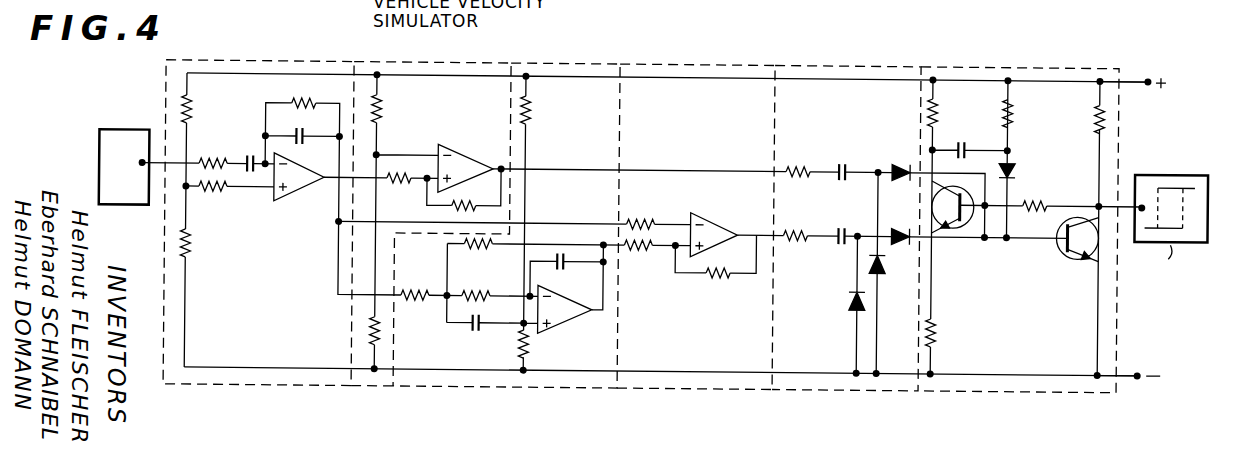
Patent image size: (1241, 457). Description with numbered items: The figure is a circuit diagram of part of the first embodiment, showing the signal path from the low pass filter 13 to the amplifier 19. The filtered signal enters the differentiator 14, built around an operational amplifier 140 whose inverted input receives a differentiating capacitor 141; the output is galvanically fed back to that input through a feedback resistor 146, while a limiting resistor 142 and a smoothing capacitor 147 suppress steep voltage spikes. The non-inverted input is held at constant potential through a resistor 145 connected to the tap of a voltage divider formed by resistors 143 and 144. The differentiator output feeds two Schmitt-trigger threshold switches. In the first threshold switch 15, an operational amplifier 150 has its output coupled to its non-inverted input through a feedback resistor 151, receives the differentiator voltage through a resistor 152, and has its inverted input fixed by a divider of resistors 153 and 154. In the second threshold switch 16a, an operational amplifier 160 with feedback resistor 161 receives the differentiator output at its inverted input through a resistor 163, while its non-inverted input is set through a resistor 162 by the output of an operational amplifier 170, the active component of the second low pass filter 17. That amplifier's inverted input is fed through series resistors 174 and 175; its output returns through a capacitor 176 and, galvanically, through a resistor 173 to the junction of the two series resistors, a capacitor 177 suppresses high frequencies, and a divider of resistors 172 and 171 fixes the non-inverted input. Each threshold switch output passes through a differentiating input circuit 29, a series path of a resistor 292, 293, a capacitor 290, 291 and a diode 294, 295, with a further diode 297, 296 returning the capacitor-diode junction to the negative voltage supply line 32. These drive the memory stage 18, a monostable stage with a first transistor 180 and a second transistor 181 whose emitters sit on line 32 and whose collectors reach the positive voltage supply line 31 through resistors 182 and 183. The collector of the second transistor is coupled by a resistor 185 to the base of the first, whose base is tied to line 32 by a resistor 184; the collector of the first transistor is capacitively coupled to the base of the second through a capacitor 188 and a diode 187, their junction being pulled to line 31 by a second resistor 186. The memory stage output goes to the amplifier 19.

The low pass filter 13 is at (108, 130).
The differentiator 14 is at (236, 60).
The first threshold switch 15 is at (428, 62).
The second threshold switch 16a is at (698, 52).
The second low pass filter 17 is at (570, 59).
The memory stage 18 is at (1043, 50).
The amplifier 19 is at (1180, 166).
The differentiating input circuit 29 is at (864, 49).
The positive voltage supply line 31 is at (1140, 68).
The negative voltage supply line 32 is at (1140, 379).
The operational amplifier 140 is at (305, 195).
The differentiating capacitor 141 is at (253, 168).
The limiting resistor 142 is at (218, 156).
The resistor 143 is at (182, 96).
The resistor 144 is at (194, 254).
The resistor 145 is at (216, 190).
The feedback resistor 146 is at (302, 100).
The smoothing capacitor 147 is at (298, 128).
The operational amplifier 150 is at (468, 154).
The feedback resistor 151 is at (454, 206).
The resistor 152 is at (398, 170).
The resistor 153 is at (383, 105).
The resistor 154 is at (370, 332).
The operational amplifier 160 is at (724, 217).
The feedback resistor 161 is at (730, 272).
The resistor 162 is at (648, 245).
The resistor 163 is at (646, 215).
The operational amplifier 170 is at (574, 311).
The resistor 171 is at (534, 367).
The resistor 172 is at (533, 105).
The resistor 173 is at (460, 239).
The resistor 174 is at (484, 281).
The resistor 175 is at (420, 296).
The capacitor 176 is at (564, 246).
The capacitor 177 is at (480, 323).
The first transistor 180 is at (958, 225).
The second transistor 181 is at (1074, 256).
The resistor 182 is at (927, 108).
The resistor 183 is at (1106, 110).
The resistor 184 is at (940, 329).
The resistor 185 is at (1038, 195).
The second resistor 186 is at (1013, 106).
The diode 187 is at (1016, 164).
The capacitor 188 is at (980, 111).
The capacitor 290 is at (840, 160).
The capacitor 291 is at (872, 267).
The resistor 292 is at (788, 164).
The resistor 293 is at (810, 234).
The diode 294 is at (898, 157).
The diode 295 is at (884, 228).
The further diode 296 is at (908, 250).
The further diode 297 is at (854, 302).